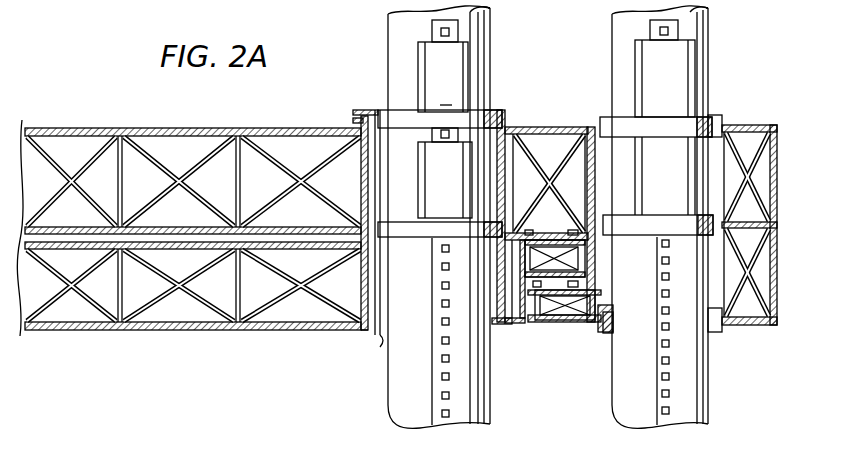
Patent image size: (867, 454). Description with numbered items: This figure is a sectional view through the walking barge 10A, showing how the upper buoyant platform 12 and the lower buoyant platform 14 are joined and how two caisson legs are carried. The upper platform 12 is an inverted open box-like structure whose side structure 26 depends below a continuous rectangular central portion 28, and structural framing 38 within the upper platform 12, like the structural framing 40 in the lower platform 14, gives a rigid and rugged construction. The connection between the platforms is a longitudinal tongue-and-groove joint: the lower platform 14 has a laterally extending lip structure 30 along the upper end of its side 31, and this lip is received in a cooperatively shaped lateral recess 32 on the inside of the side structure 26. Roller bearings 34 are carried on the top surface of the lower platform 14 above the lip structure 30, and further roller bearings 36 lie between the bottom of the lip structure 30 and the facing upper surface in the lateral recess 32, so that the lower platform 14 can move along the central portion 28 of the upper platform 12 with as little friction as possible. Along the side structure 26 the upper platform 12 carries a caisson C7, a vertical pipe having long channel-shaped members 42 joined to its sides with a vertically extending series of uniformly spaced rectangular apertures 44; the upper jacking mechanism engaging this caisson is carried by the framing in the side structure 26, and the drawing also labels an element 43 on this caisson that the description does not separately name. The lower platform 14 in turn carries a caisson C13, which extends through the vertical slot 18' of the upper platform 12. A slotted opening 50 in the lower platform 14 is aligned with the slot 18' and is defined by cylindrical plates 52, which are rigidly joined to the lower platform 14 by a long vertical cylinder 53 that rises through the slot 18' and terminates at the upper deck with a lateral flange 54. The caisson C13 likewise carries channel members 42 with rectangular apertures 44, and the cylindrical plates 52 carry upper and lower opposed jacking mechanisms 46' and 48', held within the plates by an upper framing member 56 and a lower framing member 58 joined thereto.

The walking barge 10A is at (117, 129).
The upper buoyant platform 12 is at (215, 129).
The lower buoyant platform 14 is at (180, 326).
The vertical slot 18' is at (351, 207).
The side structure 26 is at (739, 125).
The central portion 28 is at (26, 136).
The lip structure 30 is at (565, 230).
The side of lower platform 31 is at (540, 326).
The lateral recess 32 is at (585, 262).
The roller bearings 34 is at (585, 206).
The roller bearings 36 is at (560, 328).
The structural framing 38 is at (290, 178).
The structural framing 40 is at (287, 283).
The channel-shaped member 42 is at (443, 422).
The column 43 is at (672, 422).
The rectangular apertures 44 is at (450, 406).
The upper jacking mechanism 46' is at (478, 66).
The lower jacking mechanism 48' is at (445, 173).
The slotted opening 50 is at (368, 334).
The cylindrical plates 52 is at (479, 119).
The vertical cylinder 53 is at (380, 348).
The lateral flange 54 is at (365, 110).
The upper framing member 56 is at (440, 105).
The lower framing member 58 is at (400, 222).
The caisson C7 is at (704, 37).
The caisson C13 is at (483, 32).